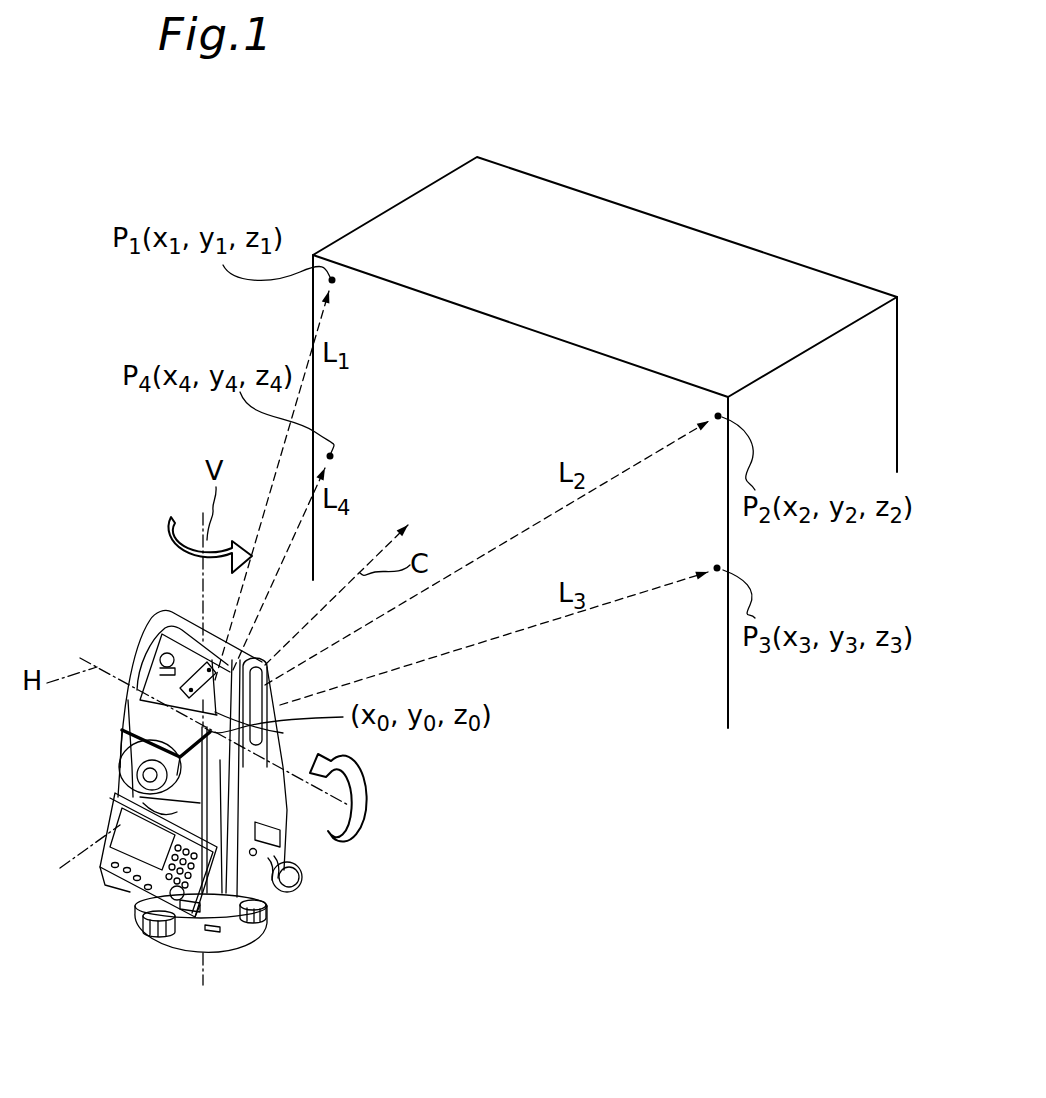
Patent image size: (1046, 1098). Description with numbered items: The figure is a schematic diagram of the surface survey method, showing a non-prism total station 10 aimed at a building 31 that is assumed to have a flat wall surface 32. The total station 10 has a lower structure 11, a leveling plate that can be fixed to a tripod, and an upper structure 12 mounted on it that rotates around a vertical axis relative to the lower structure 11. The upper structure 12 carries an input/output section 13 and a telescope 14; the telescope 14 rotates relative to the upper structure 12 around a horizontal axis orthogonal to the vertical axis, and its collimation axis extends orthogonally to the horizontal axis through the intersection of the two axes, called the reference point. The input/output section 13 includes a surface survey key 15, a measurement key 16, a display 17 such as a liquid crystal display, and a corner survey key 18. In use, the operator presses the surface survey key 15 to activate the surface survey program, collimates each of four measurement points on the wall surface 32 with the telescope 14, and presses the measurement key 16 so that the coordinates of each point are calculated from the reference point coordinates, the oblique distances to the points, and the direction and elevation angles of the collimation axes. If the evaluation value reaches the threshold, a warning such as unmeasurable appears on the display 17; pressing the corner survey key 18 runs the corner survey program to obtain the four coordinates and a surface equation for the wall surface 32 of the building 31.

The non-prism total station 10 is at (321, 885).
The lower structure (leveling plate) 11 is at (228, 947).
The upper structure 12 is at (115, 770).
The input/output section 13 is at (103, 850).
The telescope 14 is at (162, 690).
The surface survey key 15 is at (133, 907).
The measurement key 16 is at (187, 907).
The display 17 is at (133, 845).
The corner survey key 18 is at (132, 882).
The building 31 is at (708, 237).
The wall surface 32 is at (487, 343).